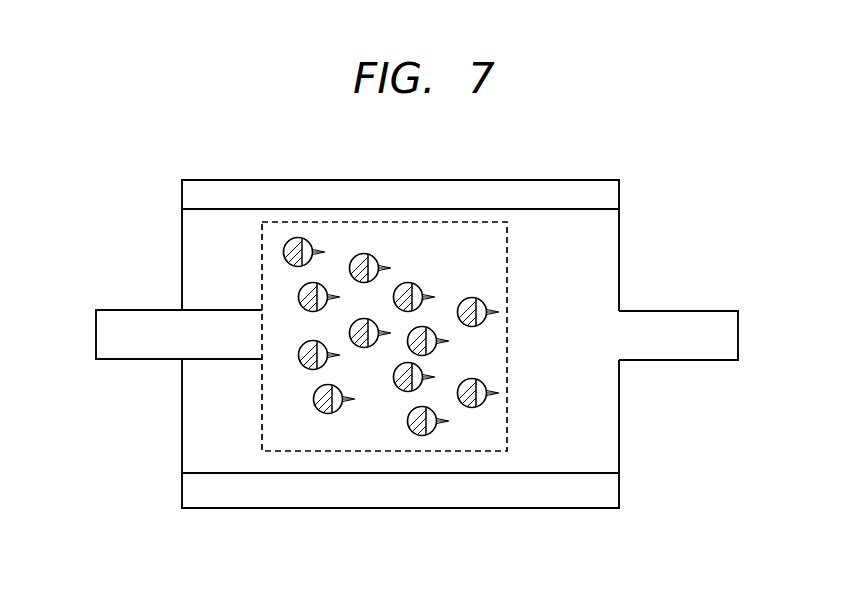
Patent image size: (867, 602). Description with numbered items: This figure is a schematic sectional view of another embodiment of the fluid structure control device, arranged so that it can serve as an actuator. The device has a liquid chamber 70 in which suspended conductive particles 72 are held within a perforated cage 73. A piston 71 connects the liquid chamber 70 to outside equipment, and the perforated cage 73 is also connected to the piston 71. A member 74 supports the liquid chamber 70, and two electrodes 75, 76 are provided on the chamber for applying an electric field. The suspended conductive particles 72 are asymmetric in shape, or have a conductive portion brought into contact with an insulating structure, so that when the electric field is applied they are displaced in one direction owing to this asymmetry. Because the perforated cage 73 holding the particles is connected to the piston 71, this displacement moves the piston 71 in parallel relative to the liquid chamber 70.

The liquid chamber 70 is at (225, 222).
The piston 71 is at (141, 321).
The suspended conductive particles 72 is at (416, 282).
The perforated cage 73 is at (493, 238).
The member for supporting the liquid chamber 74 is at (670, 321).
The electrode 75 is at (594, 192).
The electrode 76 is at (582, 497).